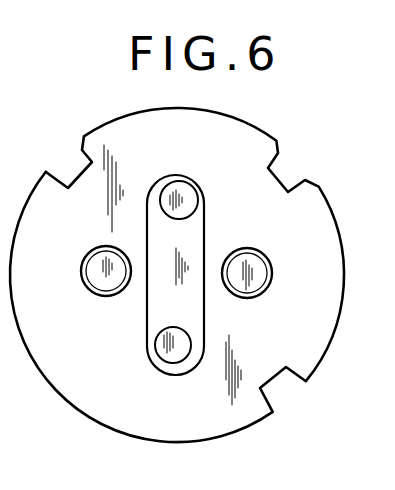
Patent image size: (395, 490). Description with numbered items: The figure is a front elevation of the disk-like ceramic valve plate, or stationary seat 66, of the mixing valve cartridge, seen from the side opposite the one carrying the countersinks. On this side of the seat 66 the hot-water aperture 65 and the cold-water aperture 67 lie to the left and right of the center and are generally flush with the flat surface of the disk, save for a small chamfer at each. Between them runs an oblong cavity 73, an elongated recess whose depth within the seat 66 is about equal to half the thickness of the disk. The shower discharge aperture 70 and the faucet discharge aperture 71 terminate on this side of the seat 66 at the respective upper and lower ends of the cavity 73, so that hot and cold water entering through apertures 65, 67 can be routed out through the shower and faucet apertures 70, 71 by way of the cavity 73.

The hot-water aperture 65 is at (103, 291).
The stationary seat 66 is at (305, 203).
The cold-water aperture 67 is at (258, 268).
The shower discharge aperture 70 is at (190, 187).
The faucet discharge aperture 71 is at (177, 357).
The oblong cavity 73 is at (196, 302).